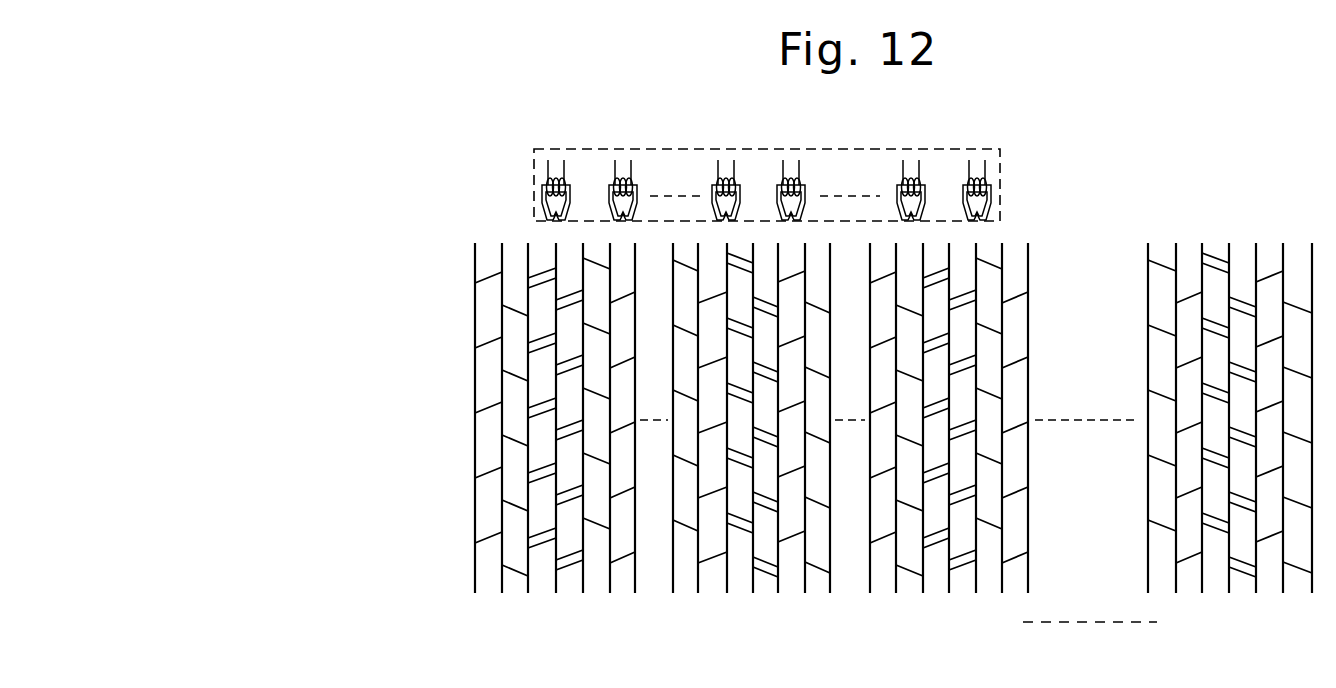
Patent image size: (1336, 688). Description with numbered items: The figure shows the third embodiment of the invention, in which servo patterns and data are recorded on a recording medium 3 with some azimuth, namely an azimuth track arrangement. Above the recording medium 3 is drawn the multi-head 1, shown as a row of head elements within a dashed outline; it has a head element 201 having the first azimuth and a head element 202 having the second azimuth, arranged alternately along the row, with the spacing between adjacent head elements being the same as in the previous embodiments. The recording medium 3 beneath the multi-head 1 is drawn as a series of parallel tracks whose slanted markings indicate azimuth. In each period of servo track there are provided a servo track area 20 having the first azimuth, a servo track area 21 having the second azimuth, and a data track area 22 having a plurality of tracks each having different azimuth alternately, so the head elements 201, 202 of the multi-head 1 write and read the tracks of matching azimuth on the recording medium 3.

The multi-head 1 is at (1010, 143).
The head element 201 is at (572, 182).
The head element 202 is at (637, 188).
The recording medium 3 is at (457, 595).
The servo track area 20 is at (530, 603).
The servo track area 21 is at (725, 603).
The data track area 22 is at (475, 603).